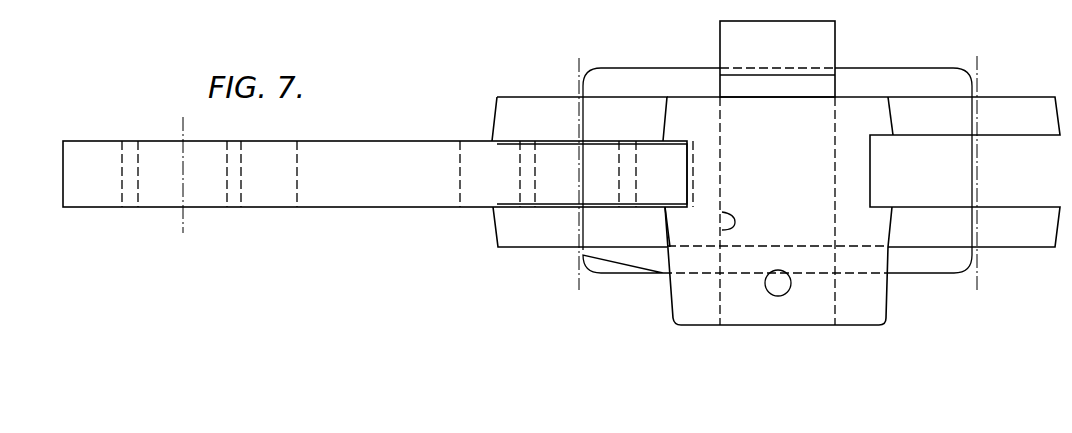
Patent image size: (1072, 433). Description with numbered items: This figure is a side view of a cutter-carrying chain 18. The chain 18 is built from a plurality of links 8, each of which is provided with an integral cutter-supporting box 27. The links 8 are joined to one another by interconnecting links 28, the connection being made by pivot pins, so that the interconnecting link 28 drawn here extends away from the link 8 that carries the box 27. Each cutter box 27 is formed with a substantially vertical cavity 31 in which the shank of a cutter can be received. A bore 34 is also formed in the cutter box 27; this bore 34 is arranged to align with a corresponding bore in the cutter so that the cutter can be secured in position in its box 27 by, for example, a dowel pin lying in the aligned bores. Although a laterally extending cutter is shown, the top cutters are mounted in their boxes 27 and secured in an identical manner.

The link 8 is at (533, 105).
The chain 18 is at (843, 40).
The cutter-supporting box 27 is at (700, 305).
The interconnecting link 28 is at (408, 155).
The cavity 31 is at (724, 240).
The bore 34 is at (781, 287).